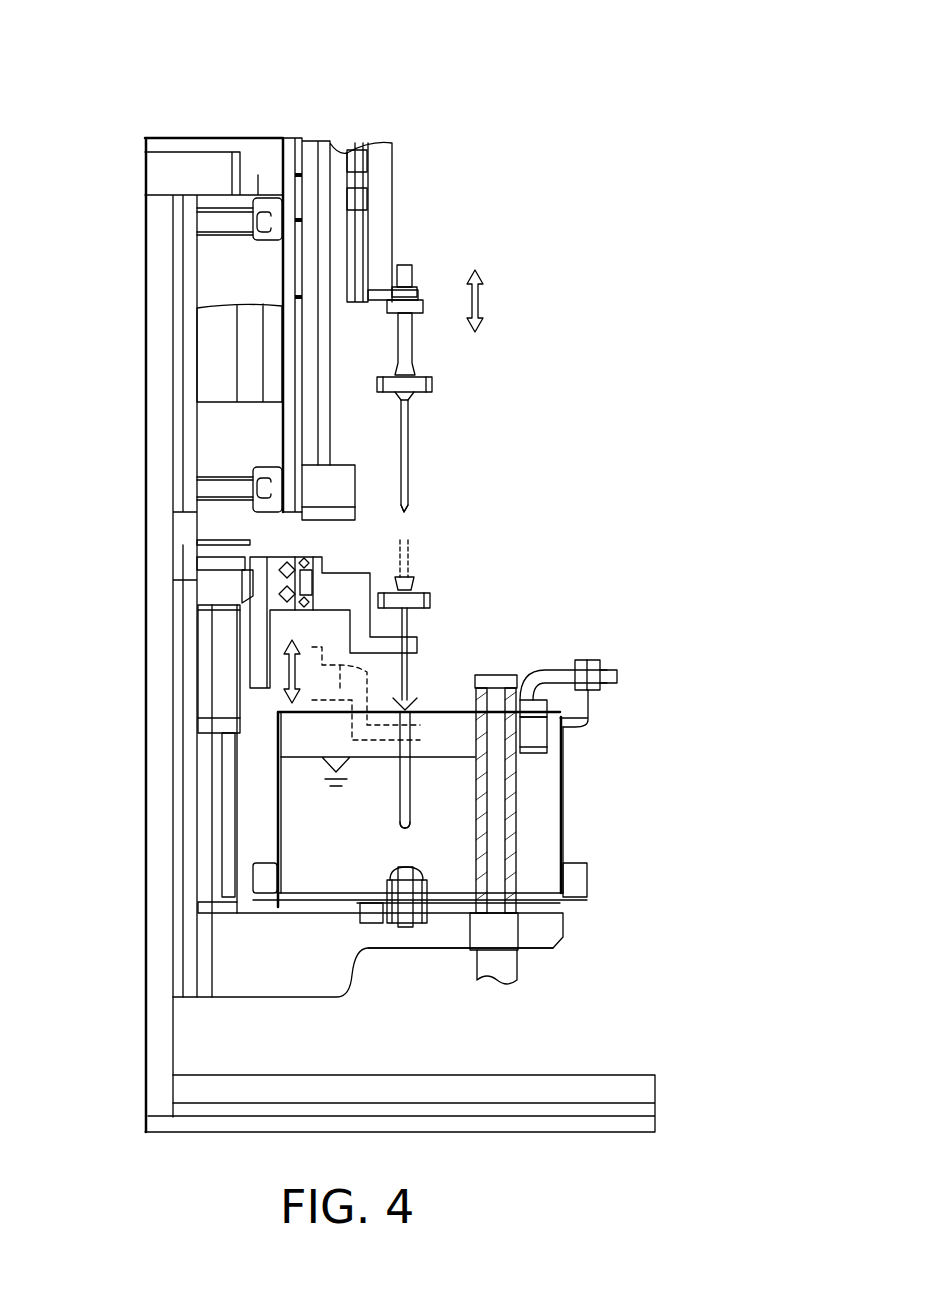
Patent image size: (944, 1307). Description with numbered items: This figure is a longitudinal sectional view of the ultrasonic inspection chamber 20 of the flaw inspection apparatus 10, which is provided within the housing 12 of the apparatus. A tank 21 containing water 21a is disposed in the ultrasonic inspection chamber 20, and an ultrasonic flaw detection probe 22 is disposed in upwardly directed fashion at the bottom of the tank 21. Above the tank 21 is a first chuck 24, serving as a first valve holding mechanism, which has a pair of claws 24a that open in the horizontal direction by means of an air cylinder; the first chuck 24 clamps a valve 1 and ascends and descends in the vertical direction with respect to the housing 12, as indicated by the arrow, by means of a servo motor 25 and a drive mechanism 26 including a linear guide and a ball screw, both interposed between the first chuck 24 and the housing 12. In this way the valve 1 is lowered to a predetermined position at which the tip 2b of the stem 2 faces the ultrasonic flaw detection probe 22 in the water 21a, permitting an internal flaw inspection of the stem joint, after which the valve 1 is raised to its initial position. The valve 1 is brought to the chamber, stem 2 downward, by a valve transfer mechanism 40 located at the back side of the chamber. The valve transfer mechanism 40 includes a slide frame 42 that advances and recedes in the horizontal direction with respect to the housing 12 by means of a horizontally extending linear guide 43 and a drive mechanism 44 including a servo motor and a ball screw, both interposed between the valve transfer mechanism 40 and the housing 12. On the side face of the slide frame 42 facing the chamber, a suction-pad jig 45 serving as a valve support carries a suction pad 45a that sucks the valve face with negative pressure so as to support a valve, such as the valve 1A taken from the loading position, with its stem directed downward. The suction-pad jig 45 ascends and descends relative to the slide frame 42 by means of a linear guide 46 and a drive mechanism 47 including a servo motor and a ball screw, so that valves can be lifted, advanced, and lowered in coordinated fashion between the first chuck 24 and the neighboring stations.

The flaw inspection apparatus 10 is at (172, 61).
The housing 12 is at (146, 380).
The linear guide 43 is at (270, 195).
The drive mechanism 44 is at (222, 343).
The slide frame 42 is at (300, 197).
The linear guide 46 is at (424, 210).
The drive mechanism 47 is at (358, 170).
The valve transfer mechanism 40 is at (493, 173).
The suction-pad jig 45 is at (413, 268).
The suction pad 45a is at (433, 383).
The valve 1 is at (427, 634).
The valve 1A is at (427, 634).
The stem 2 is at (409, 485).
The tip 2b is at (404, 512).
The servo motor 25 is at (151, 768).
The drive mechanism 26 is at (207, 620).
The first chuck 24 is at (347, 623).
The claws 24a is at (418, 641).
The ultrasonic inspection chamber 20 is at (450, 677).
The tank 21 is at (273, 804).
The water 21a is at (308, 752).
The ultrasonic flaw detection probe 22 is at (403, 870).